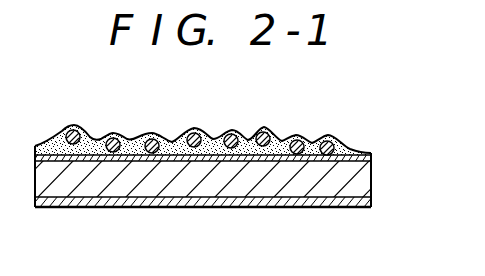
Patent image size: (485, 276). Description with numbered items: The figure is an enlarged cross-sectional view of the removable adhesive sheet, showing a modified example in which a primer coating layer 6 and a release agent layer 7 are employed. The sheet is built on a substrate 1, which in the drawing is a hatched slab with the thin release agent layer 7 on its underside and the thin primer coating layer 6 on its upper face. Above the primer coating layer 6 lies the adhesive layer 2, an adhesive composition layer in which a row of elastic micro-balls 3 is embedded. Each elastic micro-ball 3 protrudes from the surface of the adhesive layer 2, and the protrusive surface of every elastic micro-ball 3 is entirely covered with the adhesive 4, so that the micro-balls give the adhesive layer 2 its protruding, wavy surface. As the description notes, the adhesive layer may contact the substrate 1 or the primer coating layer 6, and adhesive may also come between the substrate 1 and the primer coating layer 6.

The substrate 1 is at (223, 183).
The adhesive layer 2 is at (377, 151).
The elastic micro-ball 3 is at (293, 139).
The adhesive 4 is at (172, 142).
The primer coating layer 6 is at (373, 160).
The release agent layer 7 is at (130, 198).